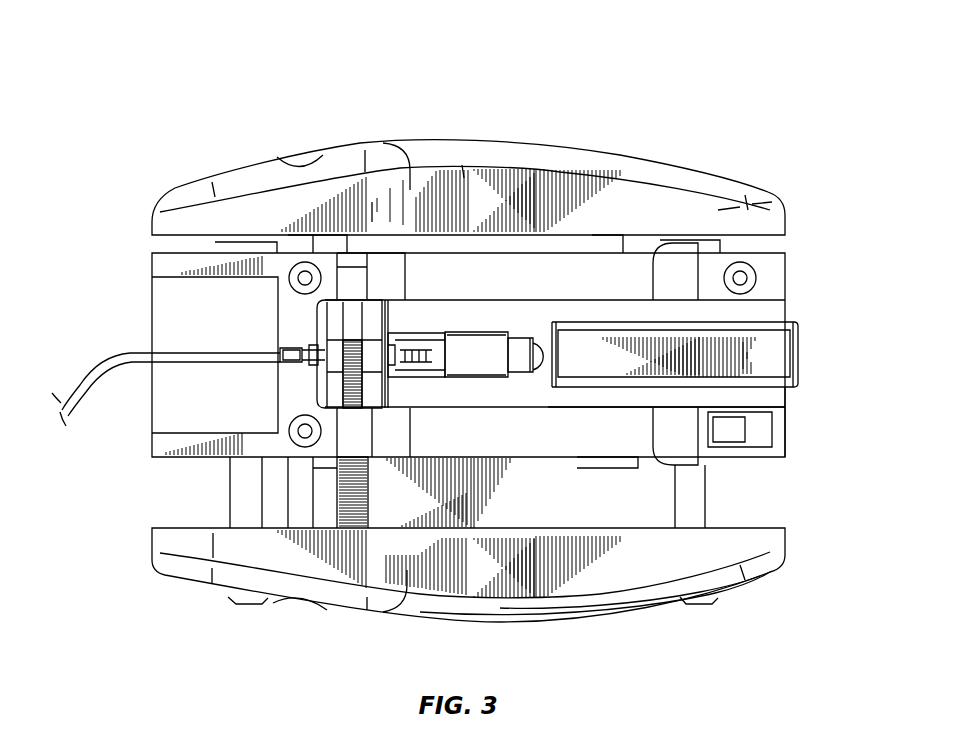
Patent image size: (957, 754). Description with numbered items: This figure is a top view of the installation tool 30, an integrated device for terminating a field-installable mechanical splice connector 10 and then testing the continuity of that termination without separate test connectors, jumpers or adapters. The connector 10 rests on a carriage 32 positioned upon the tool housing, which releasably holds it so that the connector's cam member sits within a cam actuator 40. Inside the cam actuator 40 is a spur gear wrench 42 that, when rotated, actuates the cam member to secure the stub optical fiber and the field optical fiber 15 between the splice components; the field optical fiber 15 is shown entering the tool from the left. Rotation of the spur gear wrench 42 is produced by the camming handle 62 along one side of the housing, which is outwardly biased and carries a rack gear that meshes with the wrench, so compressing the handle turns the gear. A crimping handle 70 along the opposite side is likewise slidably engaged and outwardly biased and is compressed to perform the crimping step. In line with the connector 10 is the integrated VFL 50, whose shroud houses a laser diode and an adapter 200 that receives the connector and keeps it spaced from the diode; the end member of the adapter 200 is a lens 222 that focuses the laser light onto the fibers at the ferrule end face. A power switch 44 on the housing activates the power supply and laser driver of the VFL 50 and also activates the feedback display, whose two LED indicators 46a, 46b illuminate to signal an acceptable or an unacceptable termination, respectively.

The installation tool 30 is at (257, 110).
The crimping handle 70 is at (750, 198).
The camming handle 62 is at (660, 607).
The acceptable termination indicator 46a is at (289, 278).
The unacceptable termination indicator 46b is at (289, 438).
The cam actuator 40 is at (353, 290).
The spur gear wrench 42 is at (353, 347).
The mechanical splice connector 10 is at (400, 366).
The adapter 200 is at (474, 368).
The lens 222 is at (538, 358).
The VFL 50 is at (801, 346).
The carriage 32 is at (775, 393).
The power switch 44 is at (742, 428).
The field optical fiber 15 is at (88, 364).